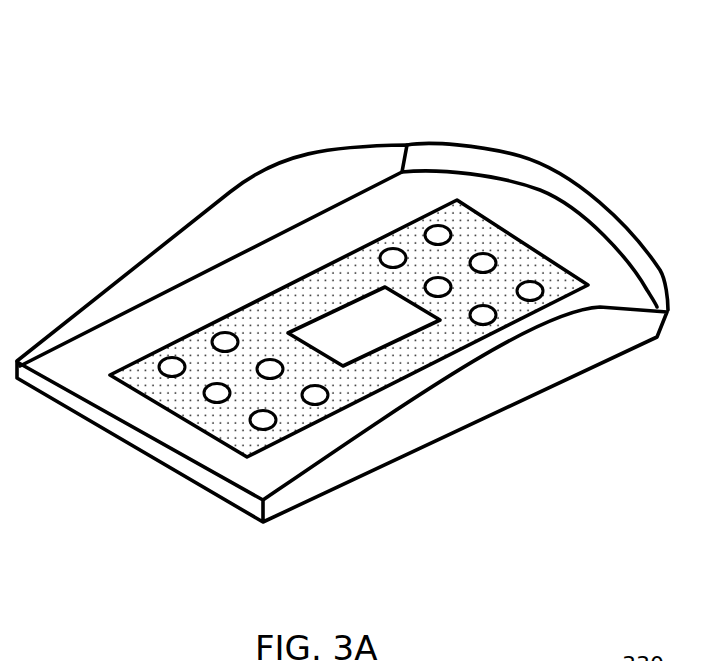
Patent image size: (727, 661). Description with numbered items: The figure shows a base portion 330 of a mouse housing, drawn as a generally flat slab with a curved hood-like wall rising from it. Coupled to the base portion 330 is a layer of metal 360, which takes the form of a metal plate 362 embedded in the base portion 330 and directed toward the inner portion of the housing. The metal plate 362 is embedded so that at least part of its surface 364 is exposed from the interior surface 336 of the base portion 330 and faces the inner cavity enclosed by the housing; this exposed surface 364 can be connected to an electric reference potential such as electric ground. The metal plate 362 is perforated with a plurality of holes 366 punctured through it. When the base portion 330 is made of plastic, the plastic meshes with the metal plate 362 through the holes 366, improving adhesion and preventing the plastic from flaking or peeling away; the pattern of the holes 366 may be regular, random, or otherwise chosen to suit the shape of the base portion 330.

The base portion 330 is at (565, 98).
The interior surface 336 is at (272, 288).
The layer of metal 360 is at (173, 416).
The metal plate 362 is at (418, 237).
The surface 364 is at (283, 338).
The holes 366 is at (478, 262).